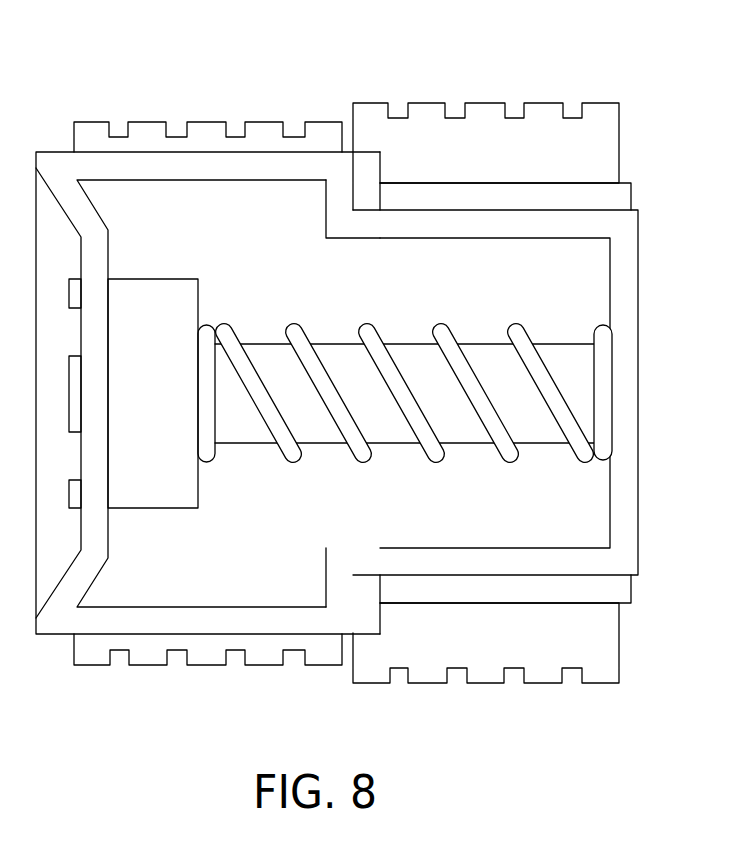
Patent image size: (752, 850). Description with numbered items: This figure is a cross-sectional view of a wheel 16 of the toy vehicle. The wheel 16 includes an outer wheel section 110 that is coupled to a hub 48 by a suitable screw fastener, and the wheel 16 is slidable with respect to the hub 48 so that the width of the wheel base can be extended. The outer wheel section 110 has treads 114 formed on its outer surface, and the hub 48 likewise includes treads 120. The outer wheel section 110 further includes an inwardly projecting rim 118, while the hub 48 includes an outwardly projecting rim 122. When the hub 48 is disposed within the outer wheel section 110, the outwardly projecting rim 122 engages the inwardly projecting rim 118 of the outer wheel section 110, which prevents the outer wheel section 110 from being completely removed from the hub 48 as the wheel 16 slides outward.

The outer wheel section 110 is at (122, 163).
The treads 114 is at (265, 127).
The wheel 16 is at (389, 93).
The outwardly projecting rim 122 is at (342, 195).
The treads 120 is at (540, 100).
The inwardly projecting rim 118 is at (362, 589).
The hub 48 is at (553, 593).